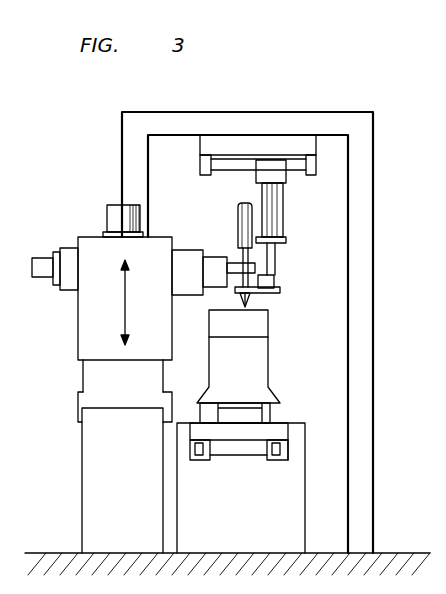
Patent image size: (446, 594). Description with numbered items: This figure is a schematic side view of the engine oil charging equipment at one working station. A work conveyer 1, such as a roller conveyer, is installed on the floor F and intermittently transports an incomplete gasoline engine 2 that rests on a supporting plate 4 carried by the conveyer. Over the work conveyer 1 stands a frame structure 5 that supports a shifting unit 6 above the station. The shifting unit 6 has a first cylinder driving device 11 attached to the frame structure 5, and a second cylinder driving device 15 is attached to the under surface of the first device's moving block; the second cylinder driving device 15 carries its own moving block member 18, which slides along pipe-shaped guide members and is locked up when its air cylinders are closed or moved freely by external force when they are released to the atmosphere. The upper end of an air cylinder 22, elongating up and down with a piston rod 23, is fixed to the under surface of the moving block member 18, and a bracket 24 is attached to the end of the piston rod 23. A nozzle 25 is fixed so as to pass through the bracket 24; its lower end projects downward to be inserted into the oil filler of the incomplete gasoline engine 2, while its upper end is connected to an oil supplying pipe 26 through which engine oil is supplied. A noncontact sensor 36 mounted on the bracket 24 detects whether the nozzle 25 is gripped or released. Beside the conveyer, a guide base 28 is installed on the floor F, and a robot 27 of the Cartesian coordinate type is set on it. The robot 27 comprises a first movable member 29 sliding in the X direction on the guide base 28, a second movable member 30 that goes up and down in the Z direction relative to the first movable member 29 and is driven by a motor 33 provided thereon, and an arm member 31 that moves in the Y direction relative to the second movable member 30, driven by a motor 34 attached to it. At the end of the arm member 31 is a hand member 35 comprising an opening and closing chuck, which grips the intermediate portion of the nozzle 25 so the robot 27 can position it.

The work conveyer 1 is at (281, 449).
The incomplete gasoline engine 2 is at (258, 370).
The supporting plate 4 is at (281, 430).
The frame structure 5 is at (371, 240).
The shifting unit 6 is at (294, 192).
The first cylinder driving device 11 is at (299, 148).
The second cylinder driving device 15 is at (195, 159).
The moving block member 18 is at (257, 176).
The air cylinder 22 is at (272, 220).
The piston rod 23 is at (274, 258).
The bracket 24 is at (280, 294).
The nozzle 25 is at (250, 296).
The oil supplying pipe 26 is at (239, 222).
The robot 27 is at (69, 354).
The guide base 28 is at (90, 499).
The first movable member 29 is at (97, 382).
The second movable member 30 is at (88, 331).
The arm member 31 is at (190, 249).
The motor 33 is at (117, 215).
The motor 34 is at (40, 274).
The hand member 35 is at (233, 274).
The noncontact sensor 36 is at (272, 281).
The floor F is at (396, 553).